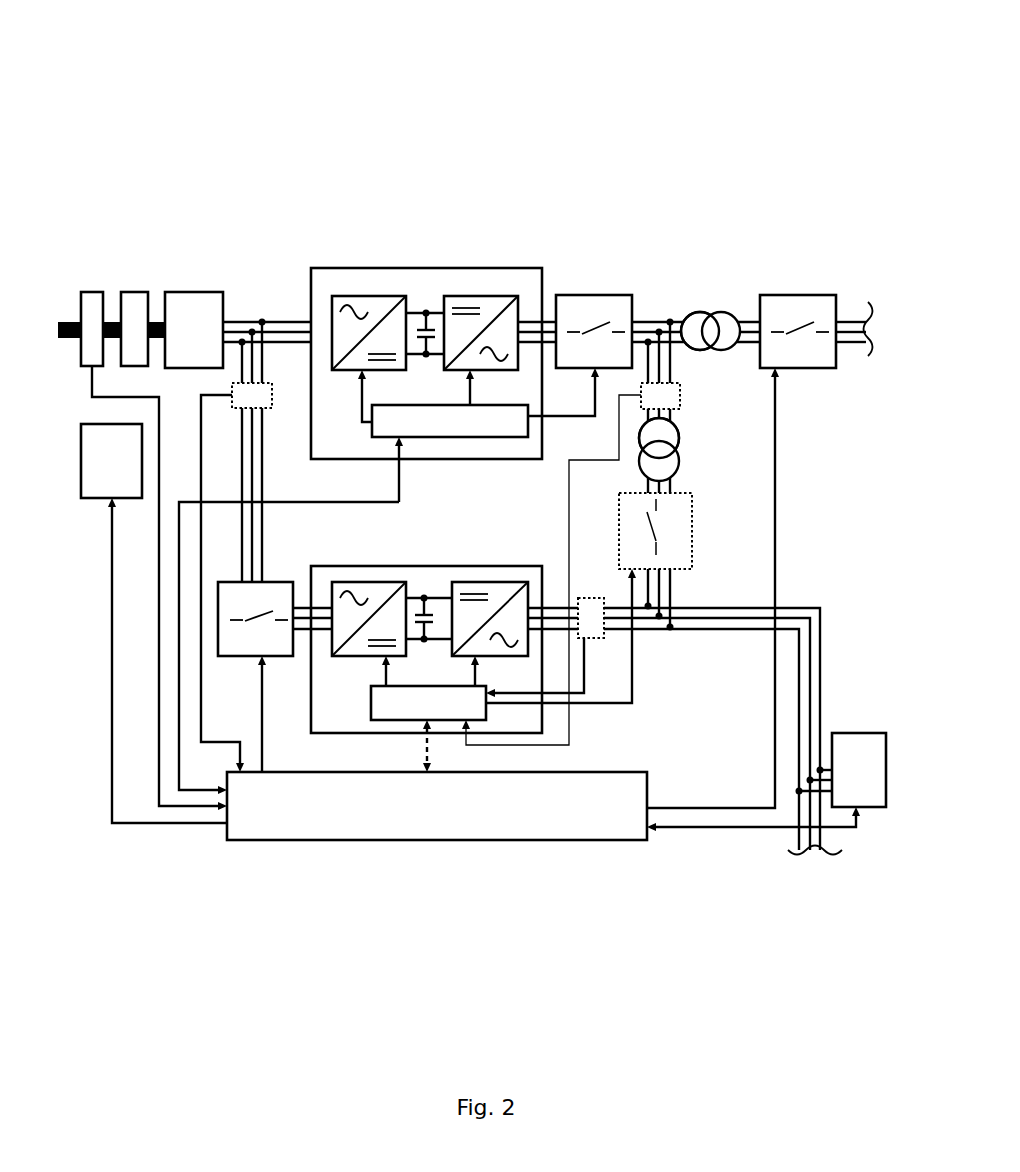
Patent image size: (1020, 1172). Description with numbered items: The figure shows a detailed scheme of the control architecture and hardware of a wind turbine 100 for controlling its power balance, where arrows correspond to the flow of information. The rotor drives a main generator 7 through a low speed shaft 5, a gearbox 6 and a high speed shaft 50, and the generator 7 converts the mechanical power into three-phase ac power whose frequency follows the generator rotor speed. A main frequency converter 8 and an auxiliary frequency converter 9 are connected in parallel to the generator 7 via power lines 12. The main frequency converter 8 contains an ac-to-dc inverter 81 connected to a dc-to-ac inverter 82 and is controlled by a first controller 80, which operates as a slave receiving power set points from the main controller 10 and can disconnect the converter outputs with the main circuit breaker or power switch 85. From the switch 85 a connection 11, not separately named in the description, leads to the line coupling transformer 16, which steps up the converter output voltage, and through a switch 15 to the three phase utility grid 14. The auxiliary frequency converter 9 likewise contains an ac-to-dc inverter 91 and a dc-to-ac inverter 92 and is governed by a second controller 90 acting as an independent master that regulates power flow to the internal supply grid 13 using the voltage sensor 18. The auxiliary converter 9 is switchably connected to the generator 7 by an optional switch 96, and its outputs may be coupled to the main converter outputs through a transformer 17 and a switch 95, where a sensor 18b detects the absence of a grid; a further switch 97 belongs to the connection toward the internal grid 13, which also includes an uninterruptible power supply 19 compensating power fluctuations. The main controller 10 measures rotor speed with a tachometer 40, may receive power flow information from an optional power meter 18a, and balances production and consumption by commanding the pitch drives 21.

The wind turbine 100 is at (518, 63).
The low speed shaft 5 is at (72, 330).
The tachometer 40 is at (89, 322).
The gearbox 6 is at (129, 322).
The high speed shaft 50 is at (157, 322).
The main generator 7 is at (194, 322).
The power lines 12 is at (243, 323).
The power meter 18a is at (267, 395).
The main frequency converter 8 is at (455, 323).
The ac-to-dc inverter 81 is at (379, 297).
The dc-to-ac inverter 82 is at (490, 297).
The first controller 80 is at (520, 410).
The main circuit breaker or power switch 85 is at (593, 297).
The output line 11 is at (652, 322).
The line coupling transformer 16 is at (714, 312).
The switch 15 is at (786, 297).
The utility grid 14 is at (868, 300).
The sensor 18b is at (657, 395).
The transformer 17 is at (678, 445).
The switch 95 is at (692, 503).
The switch 96 is at (232, 657).
The auxiliary frequency converter 9 is at (415, 771).
The ac-to-dc inverter 91 is at (352, 657).
The dc-to-ac inverter 92 is at (510, 657).
The second controller 90 is at (405, 700).
The main controller 10 is at (475, 822).
The voltage sensor 18 is at (596, 632).
The switch 97 is at (712, 792).
The internal supply grid 13 is at (808, 855).
The uninterruptible power supply 19 is at (871, 797).
The pitch drives 21 is at (92, 485).